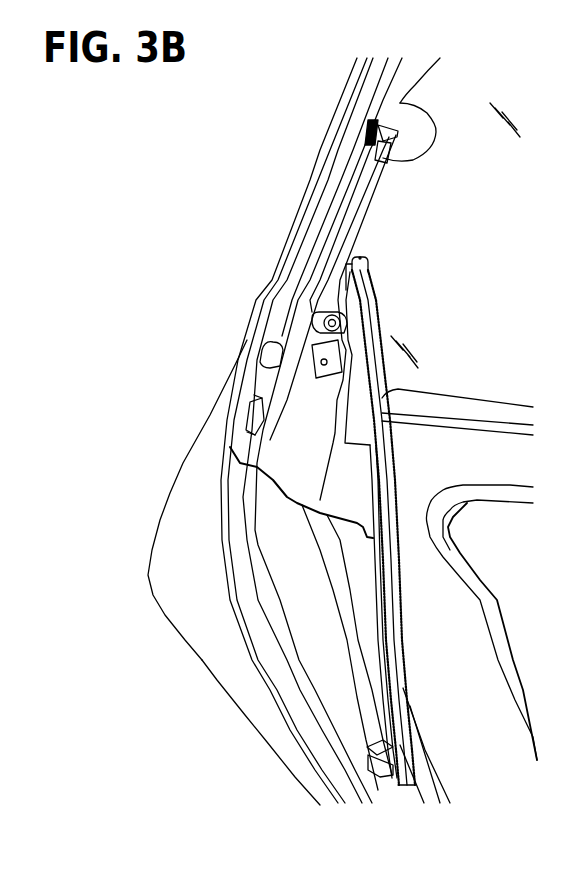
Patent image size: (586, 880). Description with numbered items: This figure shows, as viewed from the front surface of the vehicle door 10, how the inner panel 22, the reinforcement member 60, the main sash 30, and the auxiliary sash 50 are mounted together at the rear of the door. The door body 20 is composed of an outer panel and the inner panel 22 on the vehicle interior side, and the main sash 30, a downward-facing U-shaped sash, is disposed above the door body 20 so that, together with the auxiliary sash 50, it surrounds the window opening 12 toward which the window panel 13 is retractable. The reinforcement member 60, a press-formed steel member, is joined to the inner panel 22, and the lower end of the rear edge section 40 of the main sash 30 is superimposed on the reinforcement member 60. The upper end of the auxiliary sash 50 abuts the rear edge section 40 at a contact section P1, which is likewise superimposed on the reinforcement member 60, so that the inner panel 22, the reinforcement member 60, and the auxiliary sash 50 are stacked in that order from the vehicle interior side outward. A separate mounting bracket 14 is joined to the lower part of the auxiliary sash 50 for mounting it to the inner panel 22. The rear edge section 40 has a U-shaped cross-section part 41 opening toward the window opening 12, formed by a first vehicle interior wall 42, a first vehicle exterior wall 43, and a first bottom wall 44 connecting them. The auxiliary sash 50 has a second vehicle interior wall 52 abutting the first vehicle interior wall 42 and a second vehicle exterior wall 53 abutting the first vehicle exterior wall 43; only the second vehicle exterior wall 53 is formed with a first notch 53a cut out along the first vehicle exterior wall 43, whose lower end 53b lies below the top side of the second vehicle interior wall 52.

The vehicle door 10 is at (150, 217).
The window opening 12 is at (513, 316).
The window panel 13 is at (478, 77).
The mounting bracket 14 is at (368, 742).
The door body 20 is at (170, 492).
The inner panel 22 is at (198, 660).
The main sash 30 is at (343, 203).
The rear edge section 40 is at (288, 430).
The U-shaped cross-section part 41 is at (309, 225).
The first vehicle interior wall 42 is at (378, 122).
The first vehicle exterior wall 43 is at (370, 172).
The first bottom wall 44 is at (370, 144).
The auxiliary sash 50 is at (374, 507).
The second vehicle interior wall 52 is at (405, 647).
The second vehicle exterior wall 53 is at (392, 512).
The first notch 53a is at (350, 273).
The lower end of the first notch 53b is at (369, 288).
The reinforcement member 60 is at (248, 378).
The contact section P1 is at (363, 258).